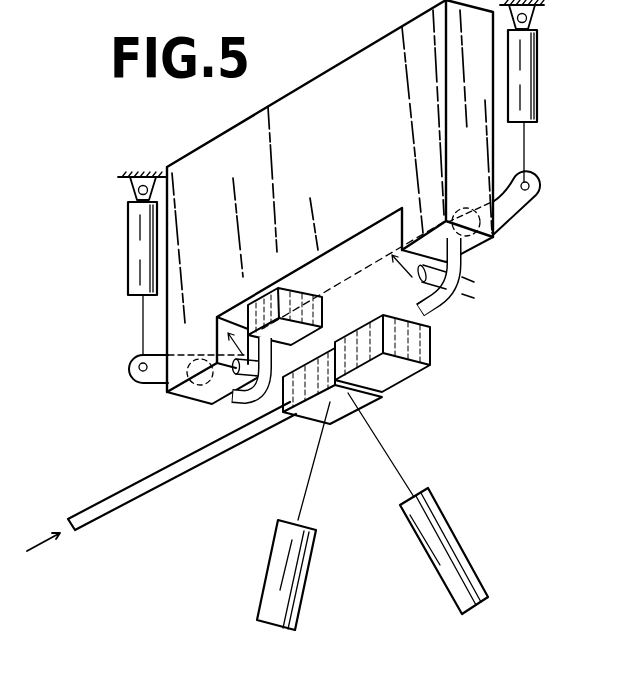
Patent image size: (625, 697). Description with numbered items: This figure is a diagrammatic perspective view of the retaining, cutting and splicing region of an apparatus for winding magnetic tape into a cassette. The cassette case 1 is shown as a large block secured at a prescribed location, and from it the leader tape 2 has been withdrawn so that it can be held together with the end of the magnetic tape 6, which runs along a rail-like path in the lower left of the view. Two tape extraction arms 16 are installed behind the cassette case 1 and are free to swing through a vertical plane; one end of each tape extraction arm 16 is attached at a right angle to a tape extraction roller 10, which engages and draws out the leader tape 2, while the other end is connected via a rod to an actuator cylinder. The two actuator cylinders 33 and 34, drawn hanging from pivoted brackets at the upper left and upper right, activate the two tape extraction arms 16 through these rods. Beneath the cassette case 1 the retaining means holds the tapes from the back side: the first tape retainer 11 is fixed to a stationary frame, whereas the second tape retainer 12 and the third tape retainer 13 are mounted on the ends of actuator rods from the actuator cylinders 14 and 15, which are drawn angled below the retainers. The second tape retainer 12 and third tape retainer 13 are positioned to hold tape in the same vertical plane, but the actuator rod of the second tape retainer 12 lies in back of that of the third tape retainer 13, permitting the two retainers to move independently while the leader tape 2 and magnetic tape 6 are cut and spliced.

The cassette case 1 is at (356, 56).
The leader tape 2 is at (233, 397).
The magnetic tape 6 is at (103, 516).
The tape extraction roller 10 is at (273, 385).
The first tape retainer 11 is at (432, 352).
The second tape retainer 12 is at (323, 310).
The third tape retainer 13 is at (334, 420).
The actuator cylinder 14 is at (487, 583).
The actuator cylinder 15 is at (298, 620).
The tape extraction arm 16 is at (142, 383).
The actuator cylinder 33 is at (538, 81).
The actuator cylinder 34 is at (128, 276).